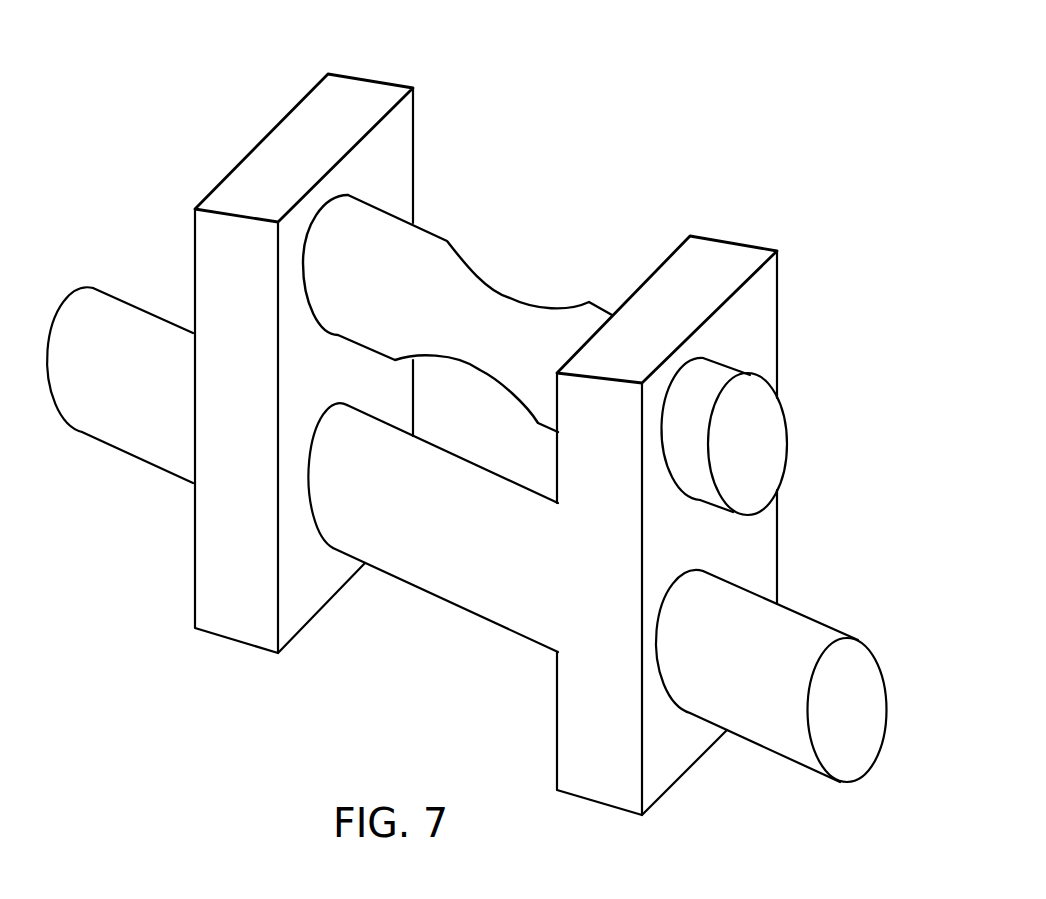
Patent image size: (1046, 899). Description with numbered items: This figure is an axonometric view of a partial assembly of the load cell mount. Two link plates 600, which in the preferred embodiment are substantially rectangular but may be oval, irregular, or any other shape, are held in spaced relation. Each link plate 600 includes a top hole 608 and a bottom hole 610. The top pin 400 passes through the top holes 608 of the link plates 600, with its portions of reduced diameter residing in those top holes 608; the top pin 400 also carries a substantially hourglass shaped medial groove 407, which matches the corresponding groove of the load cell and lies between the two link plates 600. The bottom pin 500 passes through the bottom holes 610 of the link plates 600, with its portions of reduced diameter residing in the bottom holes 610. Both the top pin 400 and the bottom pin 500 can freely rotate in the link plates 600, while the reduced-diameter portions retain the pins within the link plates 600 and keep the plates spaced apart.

The link plate 600 is at (365, 78).
The top hole 608 is at (348, 195).
The substantially hourglass shaped medial groove 407 is at (510, 298).
The top pin 400 is at (788, 443).
The bottom pin 500 is at (817, 620).
The bottom hole 610 is at (347, 405).